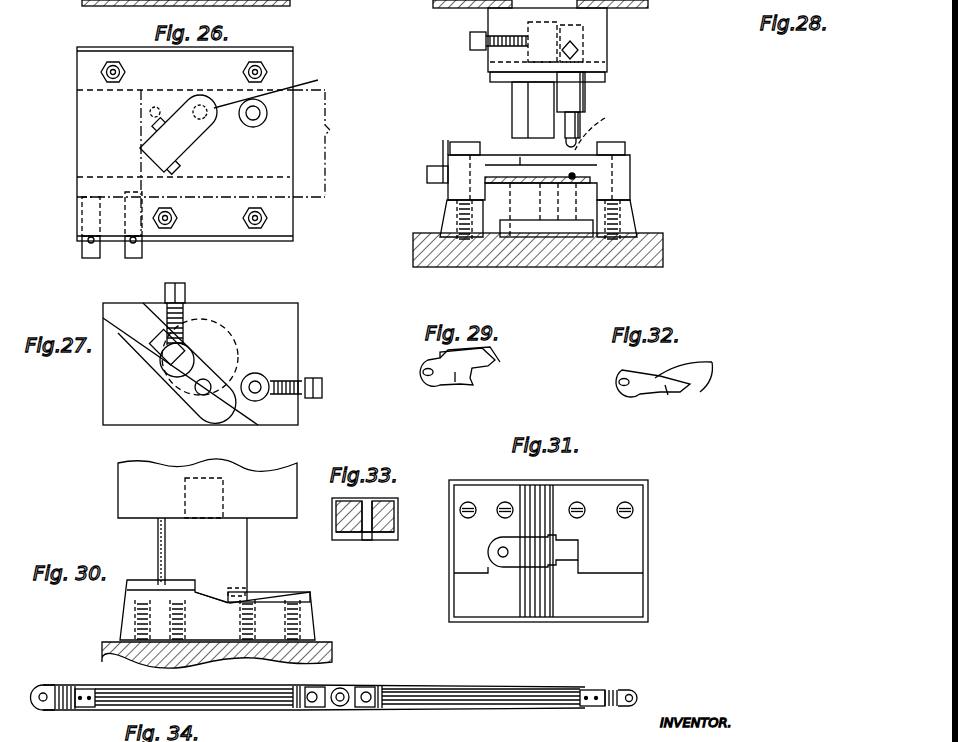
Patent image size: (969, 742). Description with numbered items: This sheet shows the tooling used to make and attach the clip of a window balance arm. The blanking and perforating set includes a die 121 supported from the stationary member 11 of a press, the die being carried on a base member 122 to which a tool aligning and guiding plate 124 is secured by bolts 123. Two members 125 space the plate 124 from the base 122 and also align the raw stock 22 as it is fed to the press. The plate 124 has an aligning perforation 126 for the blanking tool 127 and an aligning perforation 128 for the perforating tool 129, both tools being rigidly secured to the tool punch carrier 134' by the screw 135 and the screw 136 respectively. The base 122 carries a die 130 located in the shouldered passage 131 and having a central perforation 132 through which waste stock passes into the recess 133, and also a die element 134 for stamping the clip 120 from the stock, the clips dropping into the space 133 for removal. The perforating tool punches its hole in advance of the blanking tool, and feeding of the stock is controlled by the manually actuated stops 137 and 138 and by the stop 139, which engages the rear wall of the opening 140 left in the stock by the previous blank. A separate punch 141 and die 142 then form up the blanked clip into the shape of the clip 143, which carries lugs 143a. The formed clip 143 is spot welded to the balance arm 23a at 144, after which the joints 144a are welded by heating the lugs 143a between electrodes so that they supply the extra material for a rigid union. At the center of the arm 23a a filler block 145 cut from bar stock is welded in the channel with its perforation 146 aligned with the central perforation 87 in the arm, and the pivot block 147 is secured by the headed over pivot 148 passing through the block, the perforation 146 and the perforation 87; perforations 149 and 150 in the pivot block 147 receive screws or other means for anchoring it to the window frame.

In FIG. 28, the stationary member 11 is at (663, 255).
In FIG. 26, the raw stock 22 is at (330, 130).
In FIG. 34, the balance arm 23a is at (480, 690).
In FIG. 33, the central perforation 87 is at (362, 536).
In FIG. 29, the clip 120 is at (458, 377).
In FIG. 28, the die 121 is at (433, 213).
In FIG. 28, the base member 122 is at (630, 218).
In FIG. 26, the bolts 123 is at (130, 36).
In FIG. 28, the bolts 123 is at (457, 142).
In FIG. 26, the tool aligning and guiding plate 124 is at (282, 70).
In FIG. 28, the tool aligning and guiding plate 124 is at (485, 205).
In FIG. 28, the spacer members 125 is at (630, 178).
In FIG. 26, the aligning perforation 126 is at (197, 140).
In FIG. 28, the aligning perforation 126 is at (520, 157).
In FIG. 28, the blanking tool 127 is at (512, 107).
In FIG. 27, the blanking tool 127 is at (206, 380).
In FIG. 26, the aligning perforation 128 is at (255, 120).
In FIG. 28, the aligning perforation 128 is at (605, 124).
In FIG. 28, the perforating tool 129 is at (587, 96).
In FIG. 27, the perforating tool 129 is at (266, 380).
In FIG. 28, the die 130 is at (572, 210).
In FIG. 28, the shouldered passage 131 is at (582, 196).
In FIG. 28, the central perforation 132 is at (613, 250).
In FIG. 28, the recess 133 is at (510, 187).
In FIG. 28, the die element 134 is at (461, 266).
In FIG. 28, the tool punch carrier 134' is at (576, 45).
In FIG. 27, the tool punch carrier 134' is at (175, 364).
In FIG. 28, the screw 135 is at (468, 42).
In FIG. 27, the screw 135 is at (186, 293).
In FIG. 28, the screw 136 is at (590, 50).
In FIG. 27, the screw 136 is at (325, 388).
In FIG. 26, the manually actuated stop 137 is at (133, 258).
In FIG. 26, the manually actuated stop 138 is at (88, 258).
In FIG. 26, the stop 139 is at (148, 108).
In FIG. 28, the stop 139 is at (574, 174).
In FIG. 26, the opening 140 is at (280, 89).
In FIG. 34, the opening 140 is at (91, 708).
In FIG. 30, the punch 141 is at (240, 568).
In FIG. 30, the die 142 is at (305, 605).
In FIG. 31, the die 142 is at (638, 498).
In FIG. 32, the clip 143 is at (665, 388).
In FIG. 34, the clip 143 is at (48, 712).
In FIG. 29, the lugs 143a is at (495, 362).
In FIG. 32, the lugs 143a is at (672, 374).
In FIG. 34, the spot weld 144 is at (593, 708).
In FIG. 34, the welded joints 144a is at (598, 688).
In FIG. 33, the filler block 145 is at (386, 530).
In FIG. 33, the perforation 146 is at (368, 513).
In FIG. 34, the pivot block 147 is at (345, 708).
In FIG. 34, the headed over pivot 148 is at (346, 690).
In FIG. 34, the perforation 149 is at (311, 710).
In FIG. 34, the perforation 150 is at (370, 710).